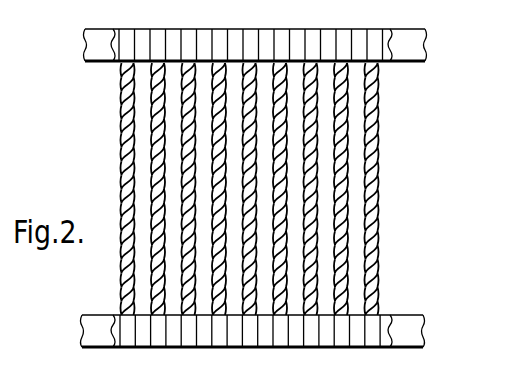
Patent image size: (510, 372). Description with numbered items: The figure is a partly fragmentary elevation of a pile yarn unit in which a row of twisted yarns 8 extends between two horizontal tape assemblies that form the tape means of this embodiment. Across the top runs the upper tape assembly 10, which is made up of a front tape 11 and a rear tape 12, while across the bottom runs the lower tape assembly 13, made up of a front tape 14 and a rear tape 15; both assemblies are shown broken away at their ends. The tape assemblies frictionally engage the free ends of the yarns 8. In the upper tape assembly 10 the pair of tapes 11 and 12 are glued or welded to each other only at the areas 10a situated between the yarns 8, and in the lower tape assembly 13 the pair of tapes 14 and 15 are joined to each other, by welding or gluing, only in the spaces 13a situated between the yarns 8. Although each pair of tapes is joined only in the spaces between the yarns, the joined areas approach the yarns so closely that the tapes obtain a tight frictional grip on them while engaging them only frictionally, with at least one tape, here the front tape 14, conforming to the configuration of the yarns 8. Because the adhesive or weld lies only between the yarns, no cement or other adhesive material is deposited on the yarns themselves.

The yarns 8 is at (148, 189).
The upper tape assembly 10 is at (381, 66).
The areas 10a is at (203, 37).
The front tape 11 is at (142, 38).
The rear tape 12 is at (98, 63).
The lower tape assembly 13 is at (384, 314).
The spaces 13a is at (198, 332).
The front tape 14 is at (142, 334).
The rear tape 15 is at (92, 322).